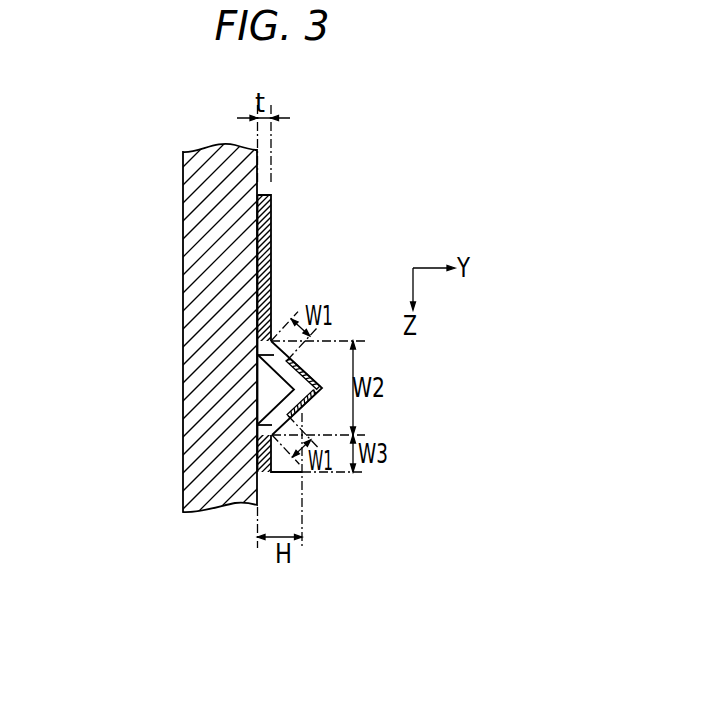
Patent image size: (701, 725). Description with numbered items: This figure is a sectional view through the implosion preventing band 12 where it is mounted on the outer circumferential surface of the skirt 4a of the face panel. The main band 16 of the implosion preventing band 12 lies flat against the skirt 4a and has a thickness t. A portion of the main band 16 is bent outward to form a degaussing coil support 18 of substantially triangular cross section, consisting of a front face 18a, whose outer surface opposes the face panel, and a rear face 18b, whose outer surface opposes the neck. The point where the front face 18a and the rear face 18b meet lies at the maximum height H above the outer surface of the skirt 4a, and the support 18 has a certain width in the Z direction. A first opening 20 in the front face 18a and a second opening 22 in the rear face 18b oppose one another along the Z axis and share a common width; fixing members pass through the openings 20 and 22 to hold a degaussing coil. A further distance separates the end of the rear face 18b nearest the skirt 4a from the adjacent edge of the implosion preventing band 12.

The skirt 4a is at (193, 233).
The implosion preventing band 12 is at (275, 325).
The main band 16 is at (272, 254).
The degaussing coil support 18 is at (199, 401).
The front face 18a is at (289, 371).
The rear face 18b is at (284, 409).
The first opening 20 is at (258, 354).
The second opening 22 is at (259, 428).